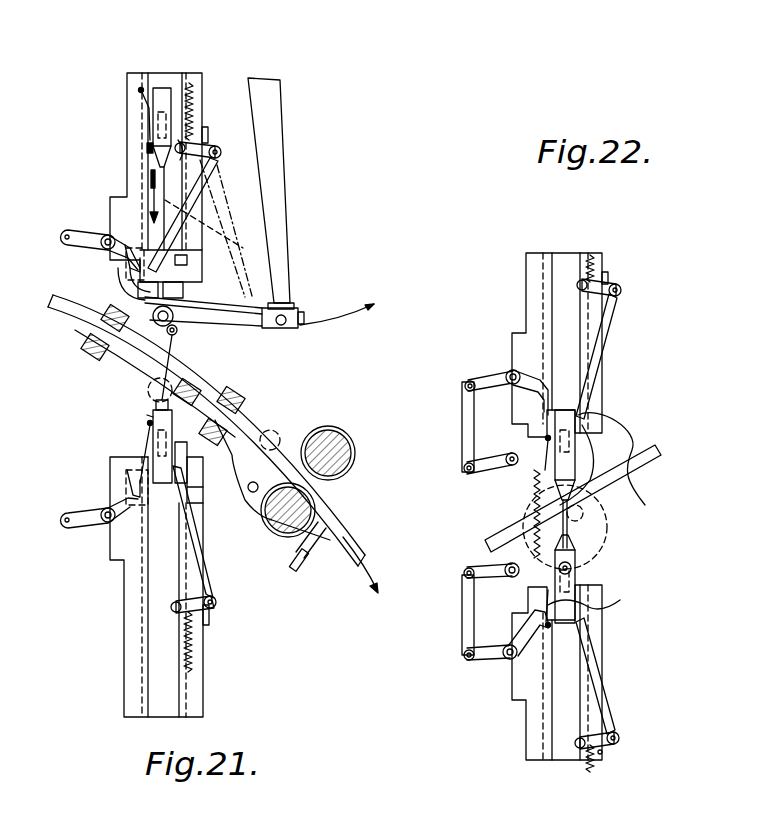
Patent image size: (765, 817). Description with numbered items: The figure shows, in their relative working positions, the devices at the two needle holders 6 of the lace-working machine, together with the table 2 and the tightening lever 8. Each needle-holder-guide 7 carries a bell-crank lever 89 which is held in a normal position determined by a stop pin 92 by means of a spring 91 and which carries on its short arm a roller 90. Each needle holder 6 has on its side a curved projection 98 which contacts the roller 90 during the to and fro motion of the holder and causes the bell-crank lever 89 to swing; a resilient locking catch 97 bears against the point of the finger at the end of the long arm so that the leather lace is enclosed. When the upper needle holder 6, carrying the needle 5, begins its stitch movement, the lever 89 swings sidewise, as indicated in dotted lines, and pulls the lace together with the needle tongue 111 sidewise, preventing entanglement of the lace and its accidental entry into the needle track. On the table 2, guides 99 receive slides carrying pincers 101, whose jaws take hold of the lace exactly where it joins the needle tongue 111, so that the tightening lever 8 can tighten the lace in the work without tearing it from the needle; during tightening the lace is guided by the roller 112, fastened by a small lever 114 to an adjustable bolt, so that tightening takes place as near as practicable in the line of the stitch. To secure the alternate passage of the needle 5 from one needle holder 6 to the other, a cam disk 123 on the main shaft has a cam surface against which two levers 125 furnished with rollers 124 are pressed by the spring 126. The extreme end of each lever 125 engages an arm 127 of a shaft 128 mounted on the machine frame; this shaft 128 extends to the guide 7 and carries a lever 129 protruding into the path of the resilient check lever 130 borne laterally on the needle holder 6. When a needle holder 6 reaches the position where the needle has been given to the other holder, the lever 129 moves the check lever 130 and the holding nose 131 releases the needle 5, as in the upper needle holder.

In FIG. 21, the table 2 is at (100, 348).
In FIG. 21, the needle 5 is at (165, 185).
In FIG. 22, the needle 5 is at (567, 518).
In FIG. 21, the needle holder 6 is at (163, 88).
In FIG. 22, the needle holder 6 is at (558, 410).
In FIG. 21, the needle-holder-guide 7 is at (137, 123).
In FIG. 22, the needle-holder-guide 7 is at (557, 506).
In FIG. 21, the tightening lever 8 is at (268, 122).
In FIG. 21, the bell-crank lever 89 is at (197, 192).
In FIG. 22, the bell-crank lever 89 is at (610, 325).
In FIG. 21, the roller 90 is at (184, 142).
In FIG. 22, the roller 90 is at (580, 282).
In FIG. 21, the spring 91 is at (197, 103).
In FIG. 22, the spring 91 is at (593, 268).
In FIG. 21, the stop pin 92 is at (206, 148).
In FIG. 22, the stop pin 92 is at (607, 275).
In FIG. 21, the resilient locking catch 97 is at (197, 528).
In FIG. 21, the curved projection 98 is at (178, 138).
In FIG. 22, the curved projection 98 is at (584, 426).
In FIG. 21, the guides 99 is at (197, 263).
In FIG. 21, the pincers 101 is at (147, 293).
In FIG. 21, the needle tongue 111 is at (208, 237).
In FIG. 21, the roller 112 is at (183, 331).
In FIG. 21, the small lever 114 is at (178, 318).
In FIG. 22, the cam disk 123 is at (610, 533).
In FIG. 22, the rollers 124 is at (573, 567).
In FIG. 22, the levers 125 is at (493, 466).
In FIG. 22, the spring 126 is at (533, 510).
In FIG. 22, the arm 127 is at (462, 412).
In FIG. 21, the shaft 128 is at (110, 234).
In FIG. 22, the shaft 128 is at (510, 373).
In FIG. 21, the lever 129 is at (133, 258).
In FIG. 22, the lever 129 is at (530, 360).
In FIG. 21, the resilient check lever 130 is at (140, 90).
In FIG. 22, the resilient check lever 130 is at (548, 532).
In FIG. 21, the holding nose 131 is at (153, 162).